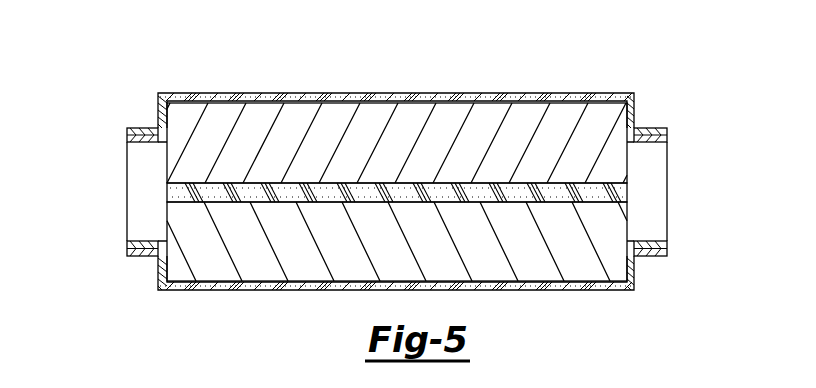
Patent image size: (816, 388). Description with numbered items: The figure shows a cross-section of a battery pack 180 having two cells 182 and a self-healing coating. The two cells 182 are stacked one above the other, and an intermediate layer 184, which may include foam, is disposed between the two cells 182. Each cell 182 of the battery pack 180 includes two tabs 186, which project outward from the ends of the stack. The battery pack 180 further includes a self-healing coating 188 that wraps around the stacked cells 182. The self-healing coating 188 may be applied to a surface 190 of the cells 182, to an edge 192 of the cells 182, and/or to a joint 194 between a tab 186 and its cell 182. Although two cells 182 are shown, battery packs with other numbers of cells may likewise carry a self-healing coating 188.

The battery pack 180 is at (182, 70).
The cell 182 is at (182, 213).
The intermediate layer 184 is at (618, 192).
The tab 186 is at (127, 136).
The self-healing coating 188 is at (397, 95).
The surface 190 is at (258, 100).
The edge 192 is at (639, 299).
The joint 194 is at (641, 117).